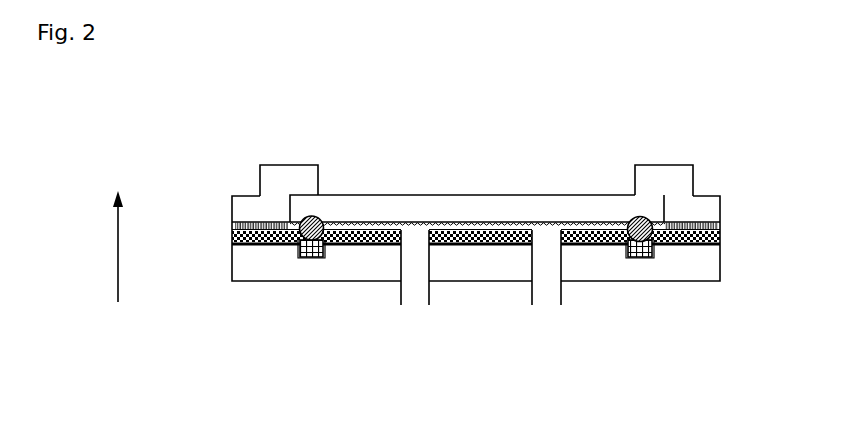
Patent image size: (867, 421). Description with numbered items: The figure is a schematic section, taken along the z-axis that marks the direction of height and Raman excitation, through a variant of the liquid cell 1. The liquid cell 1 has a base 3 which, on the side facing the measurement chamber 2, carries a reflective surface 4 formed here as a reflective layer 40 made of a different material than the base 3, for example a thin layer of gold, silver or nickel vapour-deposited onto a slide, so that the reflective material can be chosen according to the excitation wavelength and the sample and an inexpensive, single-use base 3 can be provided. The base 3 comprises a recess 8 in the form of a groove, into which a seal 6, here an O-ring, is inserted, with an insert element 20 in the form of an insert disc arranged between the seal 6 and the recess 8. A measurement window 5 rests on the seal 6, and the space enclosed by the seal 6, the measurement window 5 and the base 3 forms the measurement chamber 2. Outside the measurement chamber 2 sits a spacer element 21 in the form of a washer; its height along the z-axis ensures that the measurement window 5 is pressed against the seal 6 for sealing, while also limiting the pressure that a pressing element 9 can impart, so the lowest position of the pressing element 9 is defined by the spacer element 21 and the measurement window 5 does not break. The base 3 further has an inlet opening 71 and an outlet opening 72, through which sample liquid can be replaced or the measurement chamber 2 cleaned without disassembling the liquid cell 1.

The liquid cell 1 is at (229, 122).
The measurement chamber 2 is at (467, 222).
The base 3 is at (242, 257).
The reflective surface 4 is at (476, 181).
The reflective layer 40 is at (580, 232).
The measurement window 5 is at (382, 207).
The seal 6 is at (640, 225).
The recess 8 is at (305, 257).
The pressing element 9 is at (288, 175).
The insert element 20 is at (307, 257).
The spacer element 21 is at (255, 227).
The inlet opening 71 is at (410, 293).
The outlet opening 72 is at (542, 281).